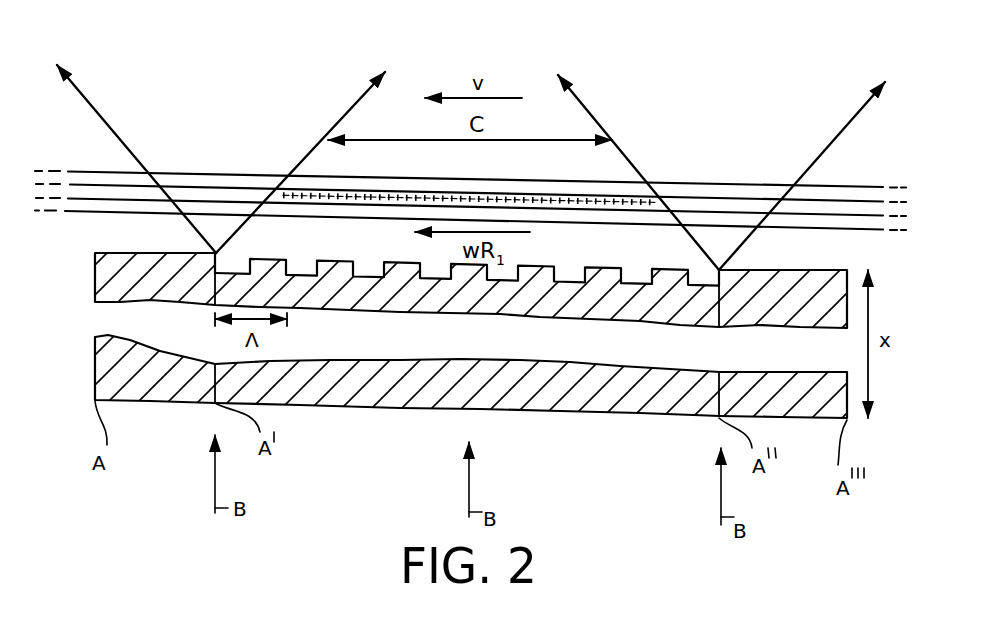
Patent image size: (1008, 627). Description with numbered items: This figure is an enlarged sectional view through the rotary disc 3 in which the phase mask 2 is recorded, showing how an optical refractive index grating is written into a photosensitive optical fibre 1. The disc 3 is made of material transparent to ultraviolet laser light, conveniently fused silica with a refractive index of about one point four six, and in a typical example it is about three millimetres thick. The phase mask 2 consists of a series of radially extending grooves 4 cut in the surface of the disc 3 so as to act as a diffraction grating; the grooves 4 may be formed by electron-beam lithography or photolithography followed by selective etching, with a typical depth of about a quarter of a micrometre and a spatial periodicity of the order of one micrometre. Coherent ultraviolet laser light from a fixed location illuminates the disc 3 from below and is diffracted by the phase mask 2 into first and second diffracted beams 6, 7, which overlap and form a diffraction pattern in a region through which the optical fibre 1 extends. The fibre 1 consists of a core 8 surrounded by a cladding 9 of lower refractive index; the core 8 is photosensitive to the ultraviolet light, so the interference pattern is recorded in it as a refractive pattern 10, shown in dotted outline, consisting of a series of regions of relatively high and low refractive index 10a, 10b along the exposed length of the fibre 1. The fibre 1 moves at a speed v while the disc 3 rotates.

The photosensitive optical fibre 1 is at (728, 184).
The phase mask 2 is at (467, 259).
The rotary disc 3 is at (775, 277).
The grooves 4 is at (706, 284).
The first diffracted beam 6 is at (585, 108).
The second diffracted beam 7 is at (853, 118).
The core 8 is at (85, 198).
The cladding 9 is at (86, 171).
The refractive pattern 10 is at (484, 170).
The region of relatively high refractive index 10a is at (354, 193).
The region of relatively low refractive index 10b is at (384, 188).